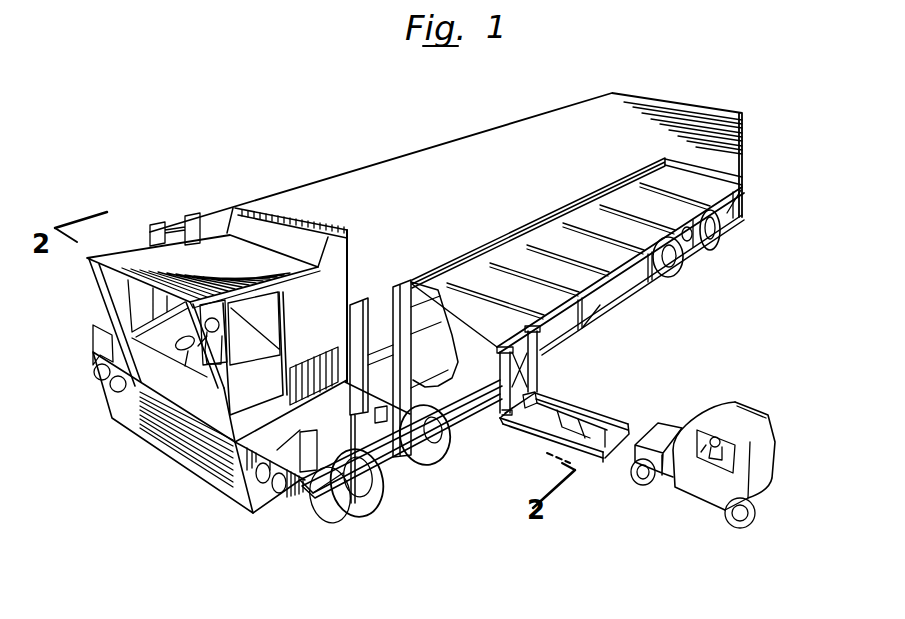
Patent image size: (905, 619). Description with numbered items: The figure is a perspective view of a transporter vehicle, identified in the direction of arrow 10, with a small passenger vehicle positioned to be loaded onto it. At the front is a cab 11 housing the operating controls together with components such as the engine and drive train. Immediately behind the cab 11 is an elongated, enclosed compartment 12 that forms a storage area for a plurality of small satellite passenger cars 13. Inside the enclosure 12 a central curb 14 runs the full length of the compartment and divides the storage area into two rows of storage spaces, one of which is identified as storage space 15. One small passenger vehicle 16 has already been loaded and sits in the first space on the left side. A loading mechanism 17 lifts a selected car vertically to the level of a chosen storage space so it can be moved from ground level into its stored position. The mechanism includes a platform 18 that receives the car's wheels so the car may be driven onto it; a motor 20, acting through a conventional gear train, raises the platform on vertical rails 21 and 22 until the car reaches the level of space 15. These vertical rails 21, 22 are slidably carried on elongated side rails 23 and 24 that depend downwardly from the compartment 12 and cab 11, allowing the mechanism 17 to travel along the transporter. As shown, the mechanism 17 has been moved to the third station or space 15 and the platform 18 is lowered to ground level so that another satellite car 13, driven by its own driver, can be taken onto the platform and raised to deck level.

The transporter vehicle 10 is at (231, 94).
The cab 11 is at (263, 497).
The enclosed compartment 12 is at (540, 122).
The small satellite passenger car 13 is at (775, 459).
The central curb 14 is at (622, 181).
The storage space 15 is at (505, 319).
The loaded passenger vehicle 16 is at (418, 290).
The loading mechanism 17 is at (535, 433).
The platform 18 is at (603, 471).
The motor 20 is at (533, 392).
The vertical rail 21 is at (516, 443).
The vertical rail 22 is at (545, 370).
The side rail 23 is at (603, 280).
The side rail 24 is at (640, 292).